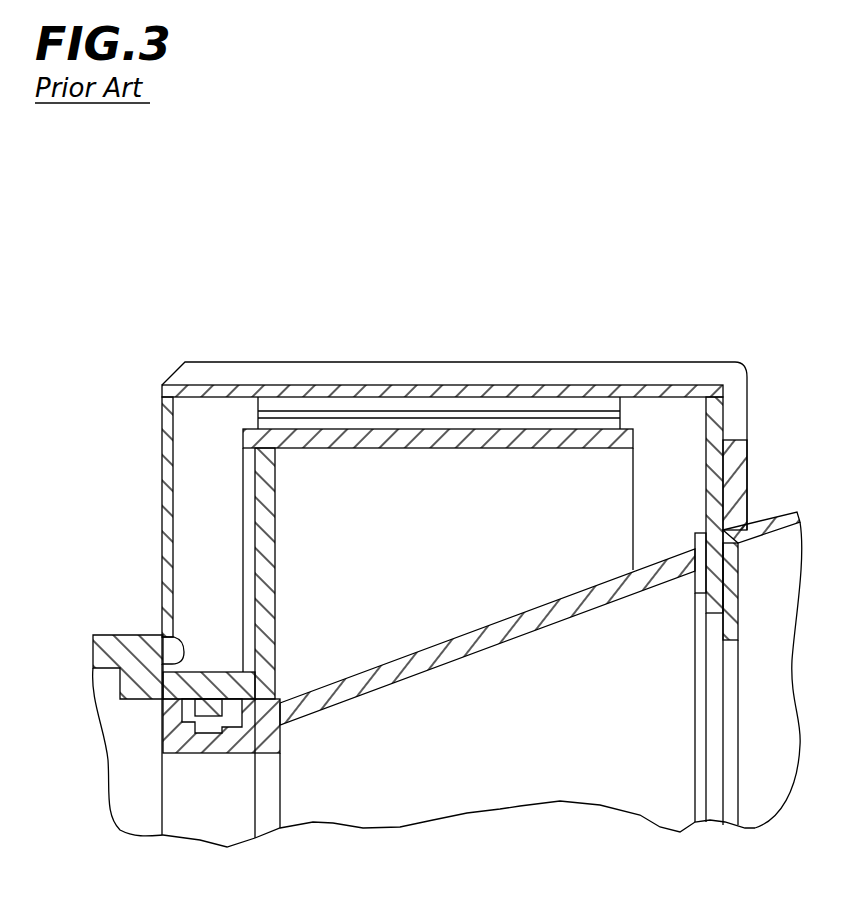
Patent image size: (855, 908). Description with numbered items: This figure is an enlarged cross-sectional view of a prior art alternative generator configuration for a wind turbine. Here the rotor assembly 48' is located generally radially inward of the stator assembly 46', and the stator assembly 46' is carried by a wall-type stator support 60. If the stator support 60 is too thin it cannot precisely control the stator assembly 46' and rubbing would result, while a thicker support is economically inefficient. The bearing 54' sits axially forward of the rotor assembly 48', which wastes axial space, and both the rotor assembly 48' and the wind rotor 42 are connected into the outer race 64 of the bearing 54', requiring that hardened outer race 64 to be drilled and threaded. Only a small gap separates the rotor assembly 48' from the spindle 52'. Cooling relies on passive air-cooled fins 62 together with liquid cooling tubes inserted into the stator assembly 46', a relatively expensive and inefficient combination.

The wind rotor 42 is at (115, 633).
The stator assembly 46' is at (355, 412).
The rotor assembly 48' is at (360, 633).
The spindle 52' is at (493, 677).
The bearing 54' is at (152, 763).
The stator support 60 is at (365, 385).
The air-cooled fins 62 is at (512, 362).
The outer race 64 is at (207, 673).